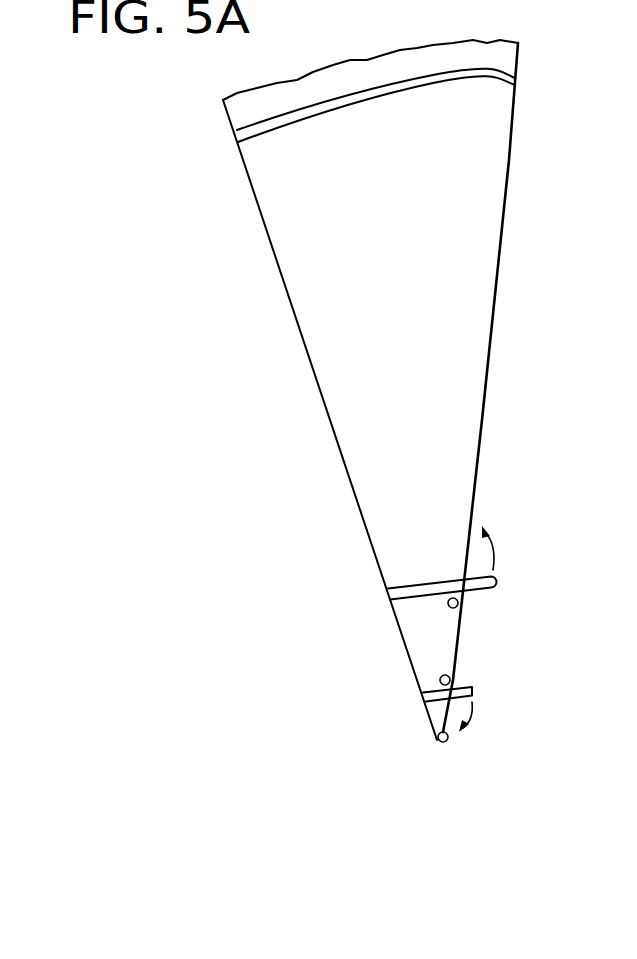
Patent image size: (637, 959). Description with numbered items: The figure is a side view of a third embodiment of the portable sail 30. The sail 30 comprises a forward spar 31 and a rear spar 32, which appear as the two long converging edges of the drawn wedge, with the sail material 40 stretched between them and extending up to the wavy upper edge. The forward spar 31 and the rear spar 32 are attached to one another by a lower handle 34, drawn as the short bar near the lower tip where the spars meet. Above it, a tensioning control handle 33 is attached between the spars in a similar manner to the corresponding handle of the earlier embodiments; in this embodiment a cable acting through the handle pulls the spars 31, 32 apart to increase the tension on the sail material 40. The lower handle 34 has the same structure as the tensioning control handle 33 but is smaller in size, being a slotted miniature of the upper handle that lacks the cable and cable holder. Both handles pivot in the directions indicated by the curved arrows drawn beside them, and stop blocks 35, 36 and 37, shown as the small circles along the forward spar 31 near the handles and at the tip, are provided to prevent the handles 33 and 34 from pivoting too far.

The portable sail 30 is at (390, 390).
The forward spar 31 is at (492, 330).
The rear spar 32 is at (320, 388).
The tensioning control handle 33 is at (413, 583).
The lower handle 34 is at (473, 689).
The stop block 35 is at (445, 742).
The stop block 36 is at (451, 673).
The stop block 37 is at (460, 613).
The sail material 40 is at (303, 285).